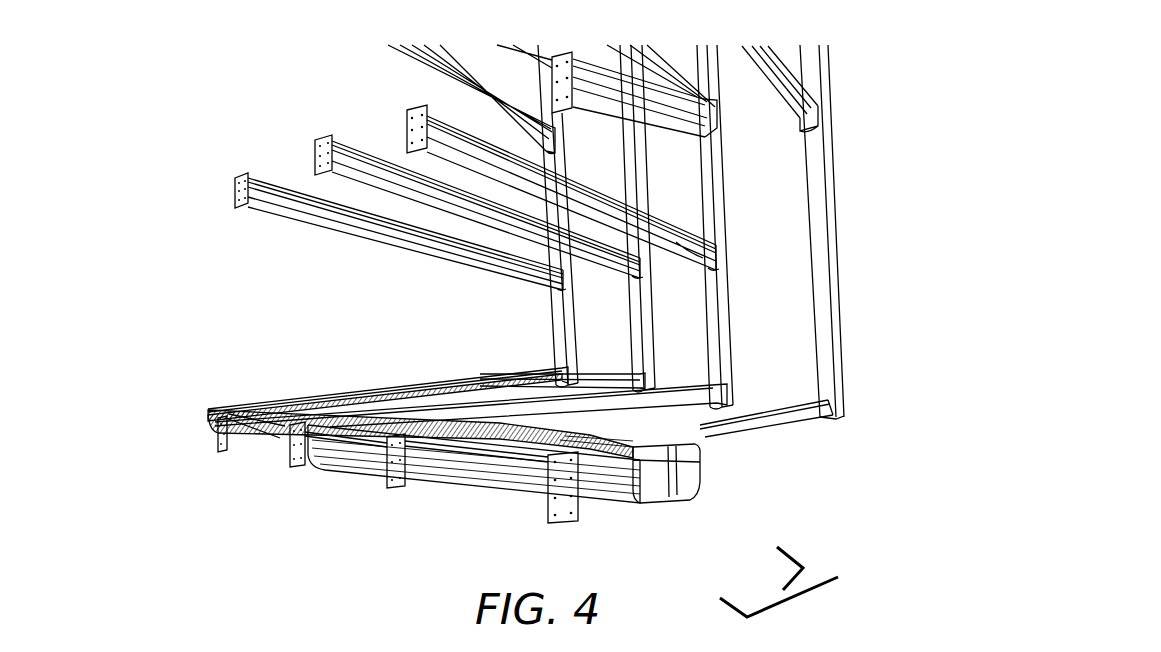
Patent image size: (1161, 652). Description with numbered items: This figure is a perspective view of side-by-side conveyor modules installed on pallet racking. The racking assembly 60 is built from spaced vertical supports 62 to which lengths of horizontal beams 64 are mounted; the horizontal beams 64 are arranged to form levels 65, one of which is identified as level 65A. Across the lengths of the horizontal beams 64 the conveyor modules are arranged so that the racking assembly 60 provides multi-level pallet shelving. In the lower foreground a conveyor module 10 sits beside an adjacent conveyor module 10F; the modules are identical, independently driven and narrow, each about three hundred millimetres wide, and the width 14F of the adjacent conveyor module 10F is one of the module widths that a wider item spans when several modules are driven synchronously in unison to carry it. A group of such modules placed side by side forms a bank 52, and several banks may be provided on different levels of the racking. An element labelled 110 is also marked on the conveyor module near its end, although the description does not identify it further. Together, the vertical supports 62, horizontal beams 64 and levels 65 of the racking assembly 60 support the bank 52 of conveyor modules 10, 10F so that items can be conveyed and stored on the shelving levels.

The racking assembly 60 is at (579, 235).
The vertical supports 62 is at (815, 154).
The horizontal beams 64 is at (795, 400).
The levels 65 is at (579, 348).
The one level 65A is at (818, 413).
The conveyor module 10 is at (516, 501).
The adjacent conveyor module 10F is at (692, 463).
The width of the adjacent conveyor module 14F is at (634, 440).
The housing of luminaire 110 is at (660, 490).
The bank 52 is at (801, 582).